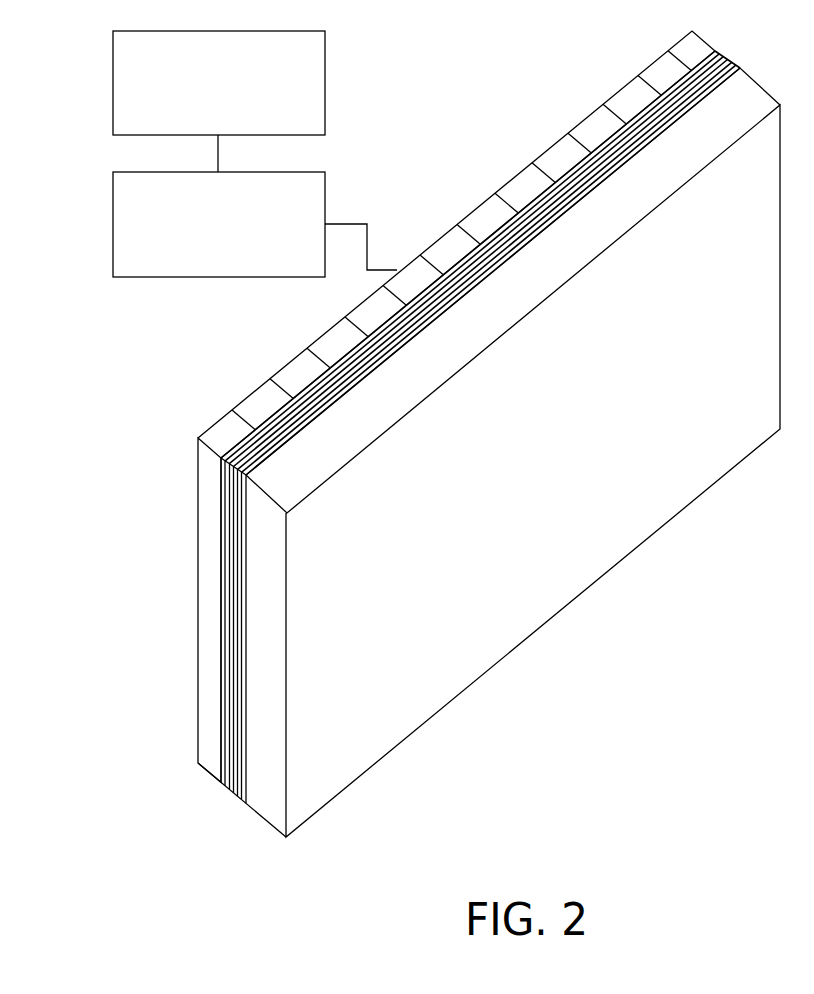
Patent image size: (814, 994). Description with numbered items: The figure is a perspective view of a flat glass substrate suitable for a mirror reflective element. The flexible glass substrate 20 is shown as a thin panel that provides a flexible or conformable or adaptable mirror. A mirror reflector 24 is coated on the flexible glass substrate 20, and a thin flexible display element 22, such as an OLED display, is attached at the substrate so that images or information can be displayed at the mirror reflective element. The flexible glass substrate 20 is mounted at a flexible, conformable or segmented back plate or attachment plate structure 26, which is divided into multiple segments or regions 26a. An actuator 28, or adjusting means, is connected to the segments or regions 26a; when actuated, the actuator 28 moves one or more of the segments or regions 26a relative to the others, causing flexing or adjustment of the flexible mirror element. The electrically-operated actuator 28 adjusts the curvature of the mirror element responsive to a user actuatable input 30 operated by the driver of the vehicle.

The flexible glass substrate 20 is at (583, 502).
The display element 22 is at (230, 663).
The mirror reflector 24 is at (573, 203).
The attachment plate structure 26 is at (202, 507).
The segments or regions 26a is at (443, 255).
The actuator 28 is at (112, 227).
The user actuatable input 30 is at (112, 83).